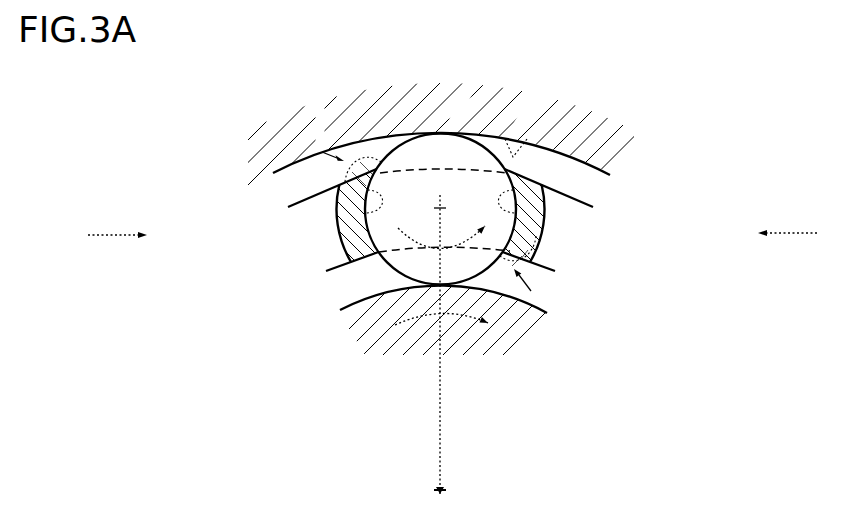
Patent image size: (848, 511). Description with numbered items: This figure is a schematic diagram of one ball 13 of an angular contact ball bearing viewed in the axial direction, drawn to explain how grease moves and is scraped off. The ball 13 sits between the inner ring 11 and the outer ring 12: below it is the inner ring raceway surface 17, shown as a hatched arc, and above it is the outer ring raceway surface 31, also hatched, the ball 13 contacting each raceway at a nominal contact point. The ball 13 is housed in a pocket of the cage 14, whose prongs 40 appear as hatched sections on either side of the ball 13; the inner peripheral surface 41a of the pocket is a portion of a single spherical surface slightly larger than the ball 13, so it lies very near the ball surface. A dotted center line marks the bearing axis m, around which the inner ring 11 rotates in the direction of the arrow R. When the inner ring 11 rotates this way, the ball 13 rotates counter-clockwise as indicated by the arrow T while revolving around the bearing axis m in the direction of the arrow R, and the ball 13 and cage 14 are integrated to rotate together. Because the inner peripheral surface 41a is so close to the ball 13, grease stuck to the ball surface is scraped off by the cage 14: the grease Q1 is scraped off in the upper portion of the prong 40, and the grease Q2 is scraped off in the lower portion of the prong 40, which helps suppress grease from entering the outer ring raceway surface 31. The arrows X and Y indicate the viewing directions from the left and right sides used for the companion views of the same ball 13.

The ball 13 is at (452, 133).
The outer ring raceway surface 31 is at (449, 130).
The outer ring 12 is at (513, 140).
The inner ring raceway surface 17 is at (372, 320).
The inner ring 11 is at (353, 295).
The prong 40 is at (444, 228).
The cage 14 is at (342, 242).
The inner peripheral surface of the pocket 41a is at (342, 214).
The grease scraped off in the upper portion of the prong Q1 is at (320, 150).
The grease scraped off in the lower portion of the prong Q2 is at (540, 298).
The arrow indicating ball rotation direction T is at (441, 222).
The arrow indicating inner ring rotation direction R is at (445, 334).
The bearing axis m is at (441, 488).
The arrow indicating viewing direction from the left X is at (117, 217).
The arrow indicating viewing direction from the right Y is at (787, 216).